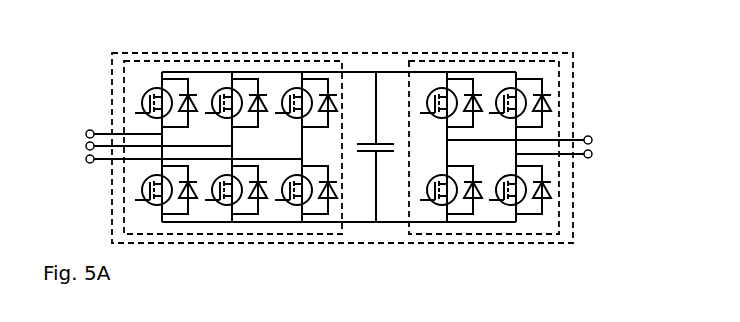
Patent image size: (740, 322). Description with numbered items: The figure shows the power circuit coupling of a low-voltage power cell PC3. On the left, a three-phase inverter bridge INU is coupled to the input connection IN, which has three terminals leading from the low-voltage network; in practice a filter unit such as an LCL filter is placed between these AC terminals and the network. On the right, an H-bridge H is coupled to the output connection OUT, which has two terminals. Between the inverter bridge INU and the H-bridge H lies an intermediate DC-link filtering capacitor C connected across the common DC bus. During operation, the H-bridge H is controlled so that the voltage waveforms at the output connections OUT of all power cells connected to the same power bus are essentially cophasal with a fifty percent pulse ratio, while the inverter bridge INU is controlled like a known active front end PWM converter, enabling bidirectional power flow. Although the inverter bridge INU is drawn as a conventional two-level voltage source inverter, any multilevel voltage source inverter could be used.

The power cell PC3 is at (586, 45).
The three-phase inverter bridge INU is at (242, 58).
The H-bridge H is at (478, 58).
The DC-link filtering capacitor C is at (375, 147).
The input connection IN is at (179, 145).
The output connection OUT is at (544, 145).